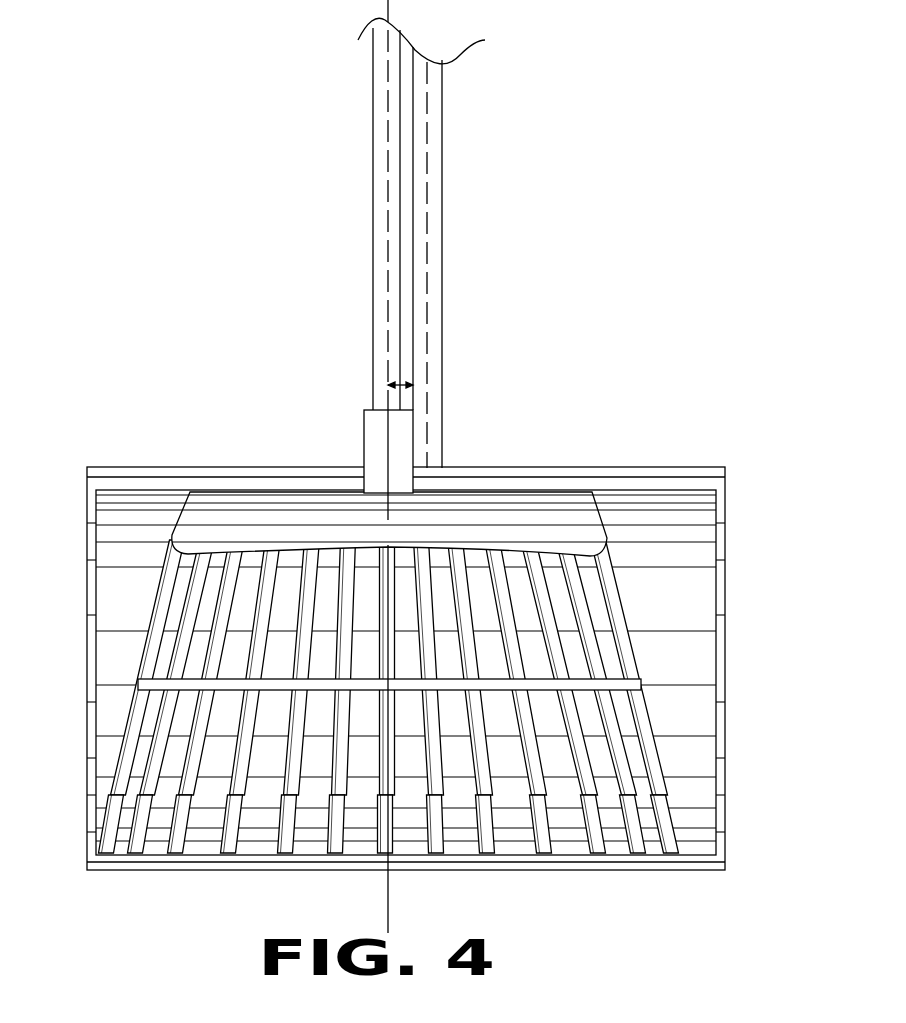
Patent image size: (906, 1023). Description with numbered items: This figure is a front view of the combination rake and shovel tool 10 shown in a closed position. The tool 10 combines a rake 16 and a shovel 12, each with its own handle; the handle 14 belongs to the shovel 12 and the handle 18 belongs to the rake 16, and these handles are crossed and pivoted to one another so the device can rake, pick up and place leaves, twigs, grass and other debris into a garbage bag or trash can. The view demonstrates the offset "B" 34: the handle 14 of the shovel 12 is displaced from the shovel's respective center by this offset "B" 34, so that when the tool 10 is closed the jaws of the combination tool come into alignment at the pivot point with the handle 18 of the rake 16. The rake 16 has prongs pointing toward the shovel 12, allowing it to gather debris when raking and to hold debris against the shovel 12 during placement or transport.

The combination rake and shovel tool 10 is at (406, 466).
The shovel 12 is at (158, 475).
The handle of the shovel 14 is at (442, 163).
The rake 16 is at (607, 528).
The handle of the rake 18 is at (373, 270).
The offset 34 is at (500, 296).
The offset "B" B is at (455, 323).